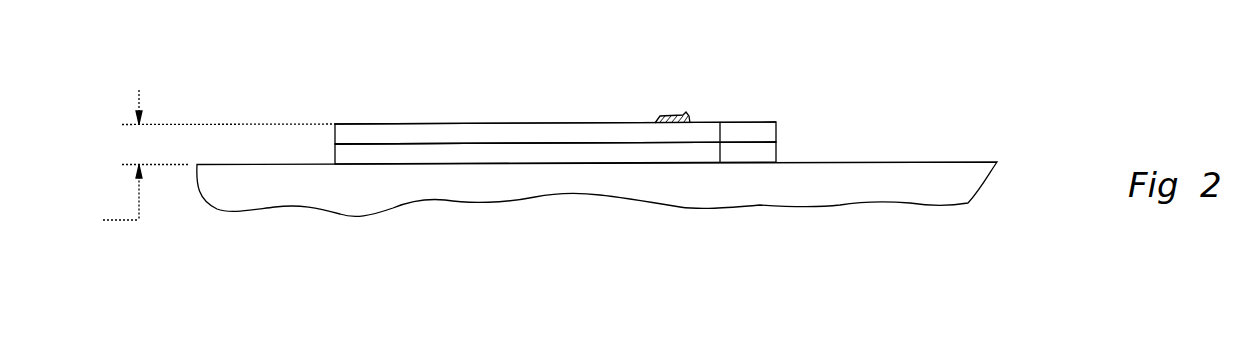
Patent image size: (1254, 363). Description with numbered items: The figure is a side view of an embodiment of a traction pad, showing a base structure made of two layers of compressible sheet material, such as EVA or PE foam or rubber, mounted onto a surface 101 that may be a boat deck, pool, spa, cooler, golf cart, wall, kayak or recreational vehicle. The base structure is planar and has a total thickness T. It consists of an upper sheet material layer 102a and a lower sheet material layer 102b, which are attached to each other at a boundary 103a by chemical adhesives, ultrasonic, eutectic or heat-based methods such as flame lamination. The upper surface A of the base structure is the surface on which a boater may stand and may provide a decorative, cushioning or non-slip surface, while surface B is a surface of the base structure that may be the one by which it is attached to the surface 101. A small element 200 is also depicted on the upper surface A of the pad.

The surface 101 is at (905, 162).
The sheet material layer 102a is at (628, 133).
The sheet material layer 102b is at (613, 150).
The boundary 103a is at (517, 145).
The surface A is at (588, 123).
The surface B is at (722, 123).
The foreign matter 200 is at (688, 110).
The total thickness T is at (208, 162).